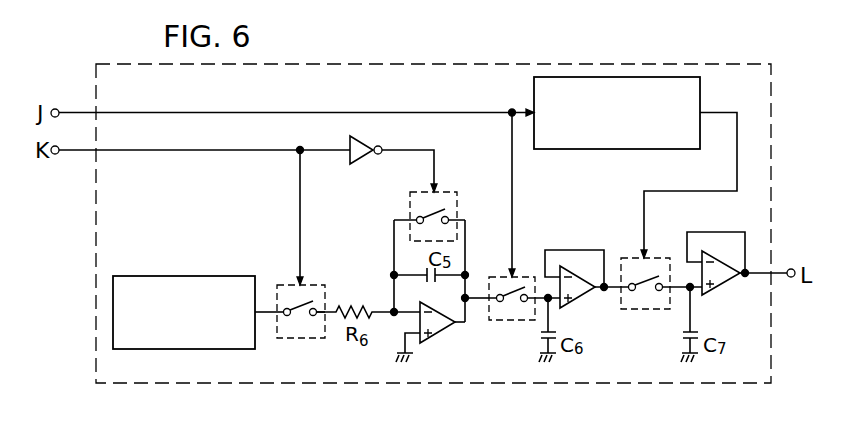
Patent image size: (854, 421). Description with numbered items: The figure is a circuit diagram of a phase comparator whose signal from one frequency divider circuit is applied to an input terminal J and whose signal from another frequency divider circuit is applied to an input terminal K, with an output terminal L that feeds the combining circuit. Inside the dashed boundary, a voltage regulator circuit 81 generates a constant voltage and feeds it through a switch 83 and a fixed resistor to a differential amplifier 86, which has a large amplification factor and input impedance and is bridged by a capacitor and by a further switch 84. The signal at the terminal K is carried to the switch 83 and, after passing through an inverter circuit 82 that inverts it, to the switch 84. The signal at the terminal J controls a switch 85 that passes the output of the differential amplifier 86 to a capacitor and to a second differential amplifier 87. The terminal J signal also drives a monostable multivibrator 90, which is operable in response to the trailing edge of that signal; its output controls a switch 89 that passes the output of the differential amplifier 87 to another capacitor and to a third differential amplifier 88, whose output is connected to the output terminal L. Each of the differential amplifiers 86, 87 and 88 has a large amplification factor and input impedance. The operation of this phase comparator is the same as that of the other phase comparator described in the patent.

The voltage regulator circuit 81 is at (221, 253).
The inverter circuit 82 is at (355, 164).
The switch 83 is at (326, 266).
The switch 84 is at (447, 173).
The switch 85 is at (524, 321).
The differential amplifier 86 is at (446, 331).
The differential amplifier 87 is at (588, 299).
The differential amplifier 88 is at (720, 291).
The switch 89 is at (627, 311).
The monostable multivibrator 90 is at (575, 150).